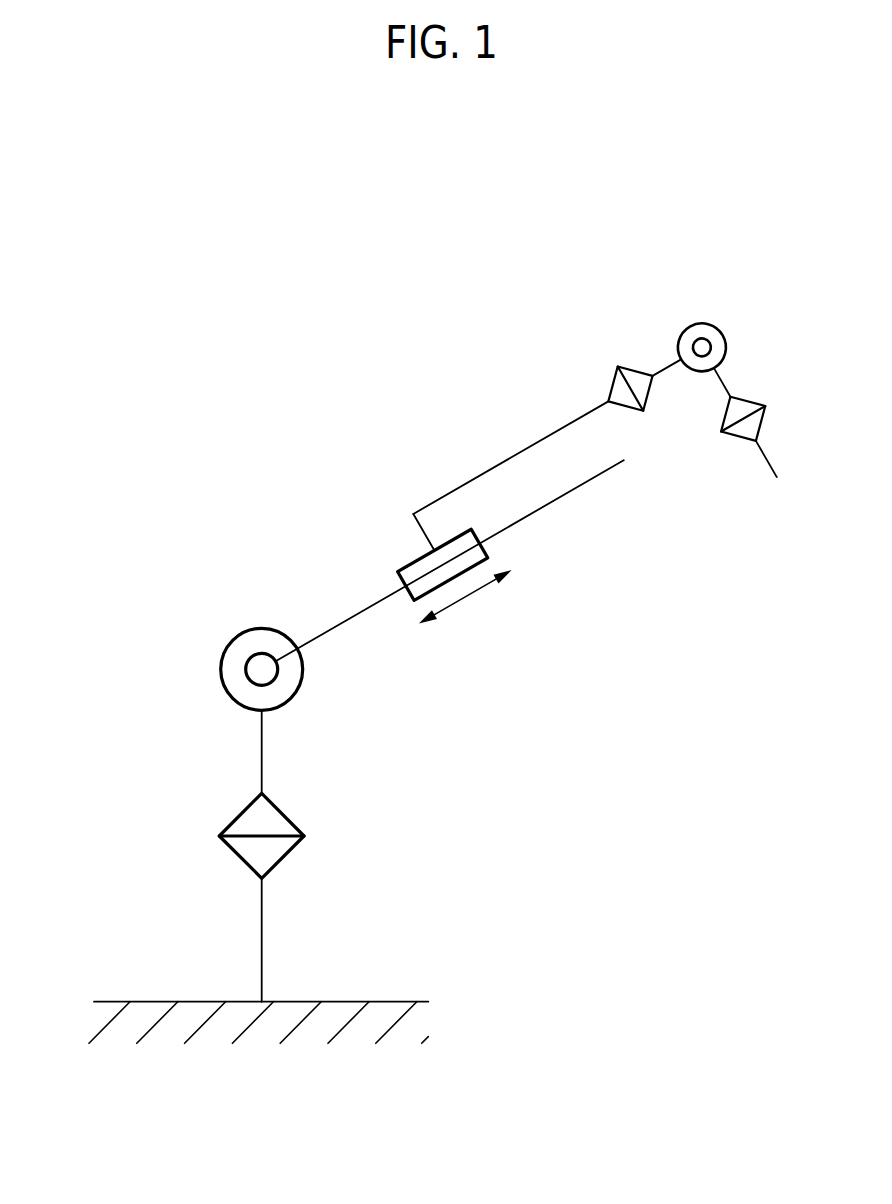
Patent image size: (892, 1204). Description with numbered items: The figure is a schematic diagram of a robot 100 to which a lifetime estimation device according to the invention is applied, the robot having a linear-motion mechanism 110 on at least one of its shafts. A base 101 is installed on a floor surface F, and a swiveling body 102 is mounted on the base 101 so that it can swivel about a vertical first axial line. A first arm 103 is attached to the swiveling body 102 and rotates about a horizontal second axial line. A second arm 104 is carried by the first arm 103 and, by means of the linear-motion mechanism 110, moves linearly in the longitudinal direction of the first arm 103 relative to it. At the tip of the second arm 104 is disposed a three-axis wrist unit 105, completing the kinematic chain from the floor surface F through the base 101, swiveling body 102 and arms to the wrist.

The robot 100 is at (296, 262).
The base 101 is at (262, 930).
The swiveling body 102 is at (262, 757).
The first arm 103 is at (345, 621).
The second arm 104 is at (527, 448).
The three-axis wrist unit 105 is at (652, 355).
The linear-motion mechanism 110 is at (395, 552).
The floor surface F is at (385, 1002).